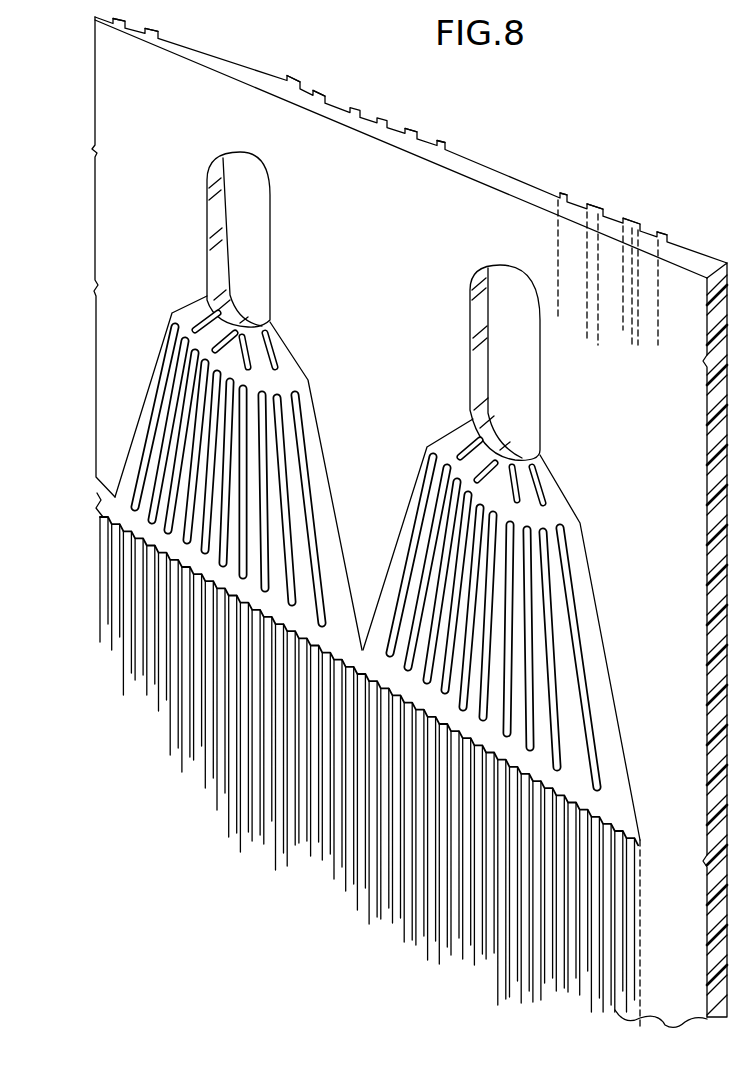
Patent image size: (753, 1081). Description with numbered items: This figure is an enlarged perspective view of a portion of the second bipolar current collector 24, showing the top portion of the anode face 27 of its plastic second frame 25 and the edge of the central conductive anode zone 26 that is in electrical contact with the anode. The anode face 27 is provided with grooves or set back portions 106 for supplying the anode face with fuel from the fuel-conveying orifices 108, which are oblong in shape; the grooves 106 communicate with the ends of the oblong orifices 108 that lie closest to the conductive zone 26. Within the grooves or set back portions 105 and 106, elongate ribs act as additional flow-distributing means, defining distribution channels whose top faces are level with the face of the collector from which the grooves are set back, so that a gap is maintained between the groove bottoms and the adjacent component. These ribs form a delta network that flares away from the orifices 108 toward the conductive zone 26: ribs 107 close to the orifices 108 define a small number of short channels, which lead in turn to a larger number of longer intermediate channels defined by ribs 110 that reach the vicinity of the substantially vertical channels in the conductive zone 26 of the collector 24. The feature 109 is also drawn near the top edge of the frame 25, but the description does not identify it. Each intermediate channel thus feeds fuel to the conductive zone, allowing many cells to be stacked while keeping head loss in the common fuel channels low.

The second bipolar current collector 24 is at (243, 64).
The second frame 25 is at (142, 102).
The central conductive anode zone 26 is at (327, 824).
The anode face 27 is at (487, 209).
The grooves or set back portions 105 is at (370, 117).
The grooves or set back portions 106 is at (377, 568).
The ribs 107 is at (270, 343).
The fuel-conveying orifices 108 is at (245, 214).
The notch 109 is at (420, 130).
The ribs 110 is at (295, 434).